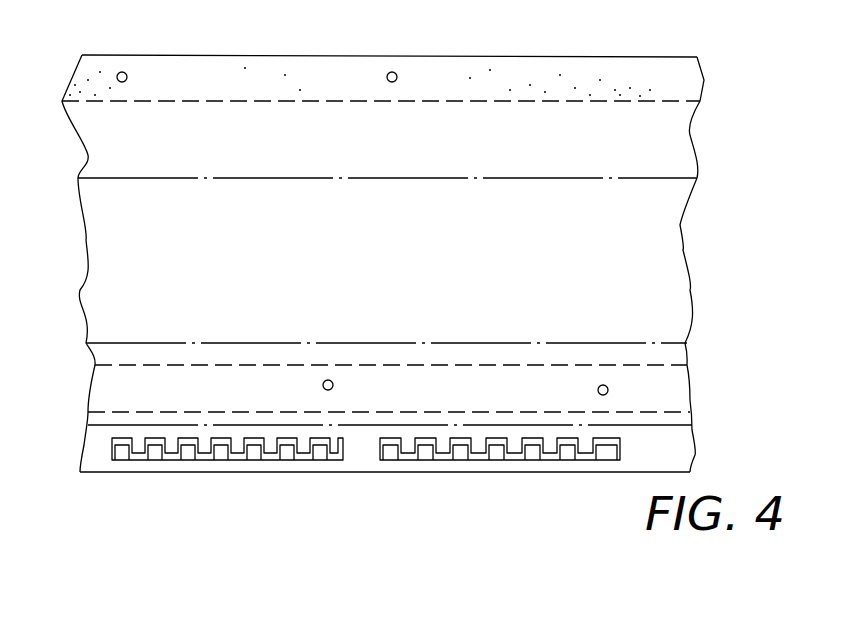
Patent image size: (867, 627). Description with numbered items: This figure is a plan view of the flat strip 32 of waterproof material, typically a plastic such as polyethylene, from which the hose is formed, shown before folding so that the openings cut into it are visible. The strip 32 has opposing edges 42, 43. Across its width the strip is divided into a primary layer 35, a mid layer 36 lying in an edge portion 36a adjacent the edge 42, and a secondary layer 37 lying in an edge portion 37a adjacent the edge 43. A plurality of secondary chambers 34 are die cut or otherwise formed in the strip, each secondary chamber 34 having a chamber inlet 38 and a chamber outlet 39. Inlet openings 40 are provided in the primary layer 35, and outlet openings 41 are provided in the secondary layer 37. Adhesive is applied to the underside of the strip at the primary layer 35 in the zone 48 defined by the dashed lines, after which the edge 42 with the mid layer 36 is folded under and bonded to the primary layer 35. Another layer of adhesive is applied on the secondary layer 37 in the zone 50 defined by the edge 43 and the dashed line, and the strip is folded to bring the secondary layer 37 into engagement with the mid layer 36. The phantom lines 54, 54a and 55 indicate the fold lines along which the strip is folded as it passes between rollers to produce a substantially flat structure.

The strip 32 is at (680, 203).
The secondary chambers 34 is at (187, 438).
The primary layer 35 is at (680, 380).
The mid layer 36 is at (680, 452).
The edge portion 36a is at (665, 447).
The secondary layer 37 is at (697, 80).
The edge portion 37a is at (640, 75).
The chamber inlet 38 is at (338, 438).
The chamber outlet 39 is at (113, 447).
The inlet openings 40 is at (328, 380).
The outlet openings 41 is at (127, 74).
The edge 42 is at (210, 473).
The edge 43 is at (490, 57).
The zone 48 is at (137, 383).
The zone 50 is at (565, 67).
The fold line 54 is at (678, 425).
The fold line 54a is at (370, 342).
The fold line 55 is at (378, 178).